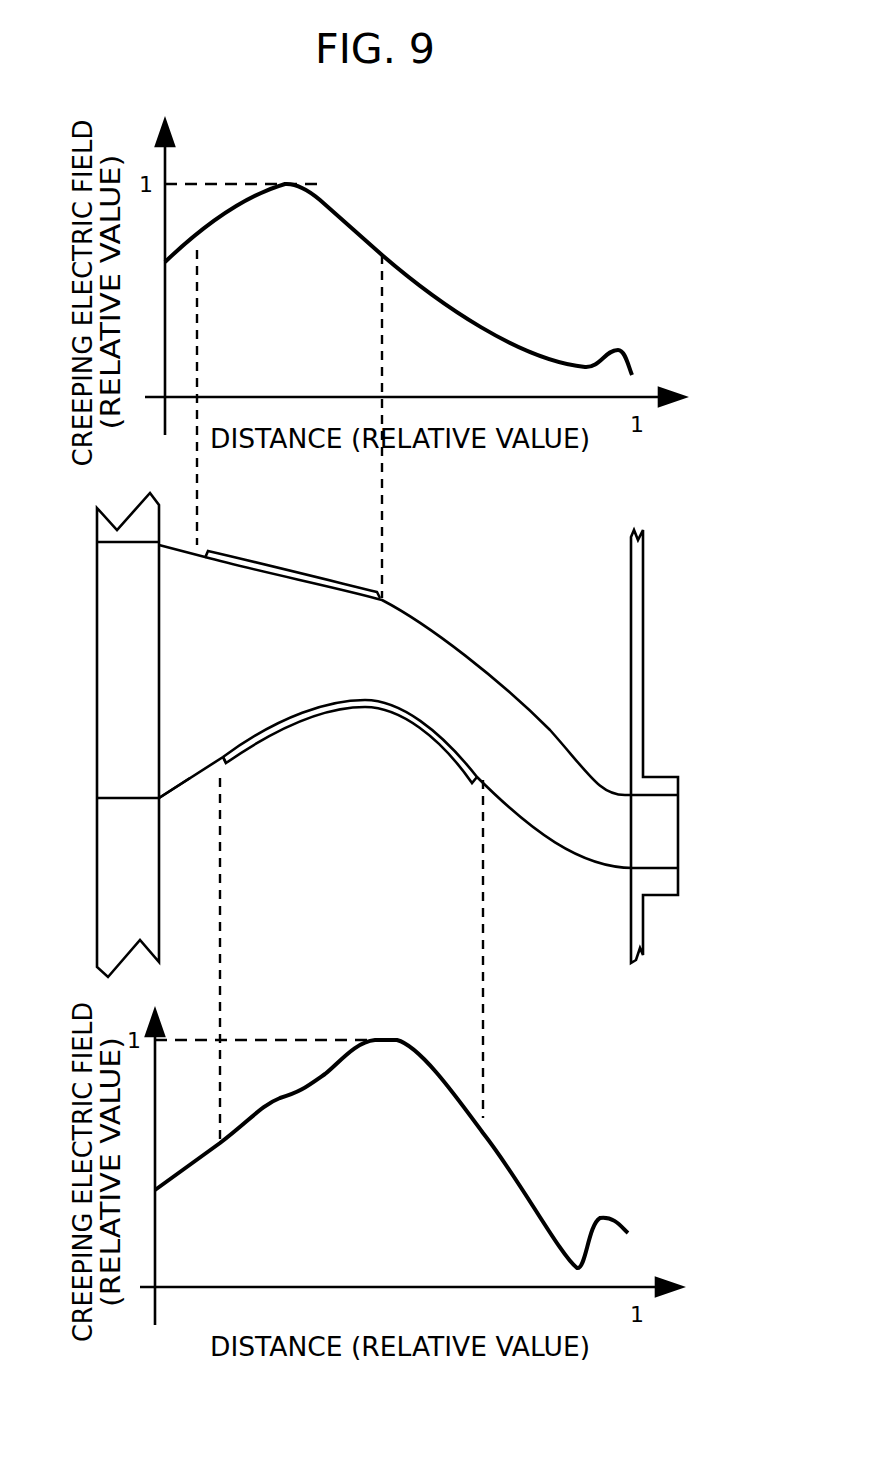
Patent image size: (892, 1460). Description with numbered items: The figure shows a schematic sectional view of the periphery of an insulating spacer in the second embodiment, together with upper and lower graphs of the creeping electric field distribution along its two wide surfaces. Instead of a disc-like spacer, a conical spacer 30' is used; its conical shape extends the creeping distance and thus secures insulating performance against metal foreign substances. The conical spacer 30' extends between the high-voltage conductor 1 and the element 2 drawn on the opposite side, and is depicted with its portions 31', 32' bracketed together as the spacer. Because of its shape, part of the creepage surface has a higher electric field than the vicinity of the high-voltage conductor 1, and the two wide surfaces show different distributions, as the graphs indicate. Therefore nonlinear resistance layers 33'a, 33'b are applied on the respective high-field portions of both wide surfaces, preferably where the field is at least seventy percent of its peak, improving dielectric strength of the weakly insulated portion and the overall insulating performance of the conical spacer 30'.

The high-voltage conductor 1 is at (110, 851).
The conductor 2 is at (640, 673).
The conical spacer 30' is at (297, 894).
The first electrode portion 31' is at (211, 821).
The second electrode portion 32' is at (278, 802).
The nonlinear resistance layer 33'a is at (292, 546).
The nonlinear resistance layer 33'b is at (350, 769).